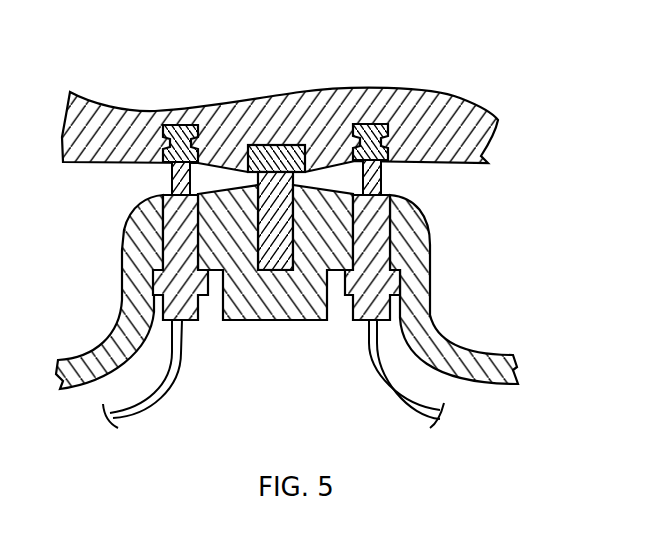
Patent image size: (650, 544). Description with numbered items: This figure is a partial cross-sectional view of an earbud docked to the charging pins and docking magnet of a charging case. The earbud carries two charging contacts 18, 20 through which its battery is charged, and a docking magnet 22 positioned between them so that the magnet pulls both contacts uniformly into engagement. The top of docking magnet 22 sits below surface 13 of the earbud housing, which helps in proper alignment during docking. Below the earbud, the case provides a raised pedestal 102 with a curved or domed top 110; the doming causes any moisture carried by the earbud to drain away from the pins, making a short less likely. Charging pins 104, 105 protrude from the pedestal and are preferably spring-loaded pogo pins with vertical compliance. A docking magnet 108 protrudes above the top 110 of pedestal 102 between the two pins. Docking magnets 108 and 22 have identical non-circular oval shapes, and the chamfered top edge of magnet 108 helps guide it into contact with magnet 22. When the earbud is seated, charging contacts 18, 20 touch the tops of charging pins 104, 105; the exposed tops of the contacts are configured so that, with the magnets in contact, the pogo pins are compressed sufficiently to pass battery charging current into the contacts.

The surface 13 is at (494, 128).
The charging contact 18 is at (182, 124).
The charging contact 20 is at (373, 124).
The docking magnet 22 is at (273, 145).
The pedestal 102 is at (116, 253).
The charging pin 104 is at (163, 196).
The charging pin 105 is at (388, 196).
The docking magnet 108 is at (283, 258).
The domed top 110 is at (330, 196).